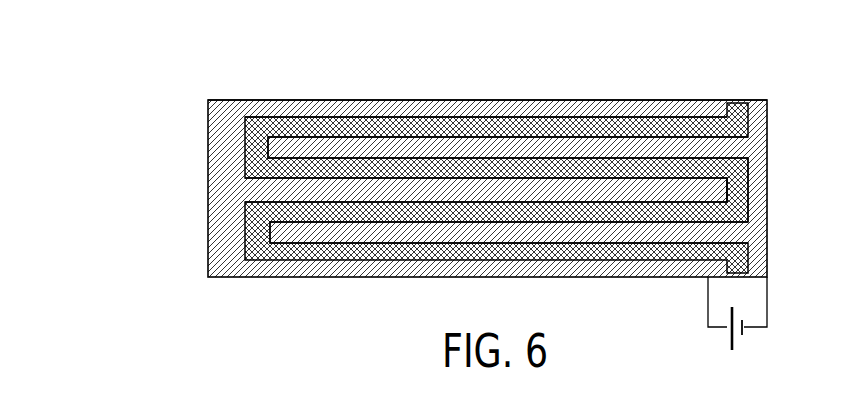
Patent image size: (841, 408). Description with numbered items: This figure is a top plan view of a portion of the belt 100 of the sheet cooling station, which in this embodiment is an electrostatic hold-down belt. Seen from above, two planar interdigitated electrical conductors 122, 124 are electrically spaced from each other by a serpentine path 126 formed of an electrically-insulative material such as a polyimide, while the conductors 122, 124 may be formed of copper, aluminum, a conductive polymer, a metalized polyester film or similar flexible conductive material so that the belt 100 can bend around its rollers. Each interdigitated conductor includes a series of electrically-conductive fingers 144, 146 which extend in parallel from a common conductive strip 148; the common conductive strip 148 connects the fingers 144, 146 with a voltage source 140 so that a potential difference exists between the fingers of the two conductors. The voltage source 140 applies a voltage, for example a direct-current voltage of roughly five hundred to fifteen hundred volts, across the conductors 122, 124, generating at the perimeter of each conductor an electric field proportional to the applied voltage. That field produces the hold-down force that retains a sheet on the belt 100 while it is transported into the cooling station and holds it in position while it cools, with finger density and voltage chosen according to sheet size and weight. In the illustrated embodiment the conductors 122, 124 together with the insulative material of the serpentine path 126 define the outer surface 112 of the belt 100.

The belt 100 is at (472, 191).
The outer surface 112 is at (414, 195).
The electrical conductor 122 is at (337, 101).
The electrical conductor 124 is at (553, 143).
The serpentine path 126 is at (470, 108).
The voltage source 140 is at (746, 347).
The electrically-conductive finger 144 is at (625, 142).
The electrically-conductive finger 146 is at (613, 233).
The common conductive strip 148 is at (757, 188).